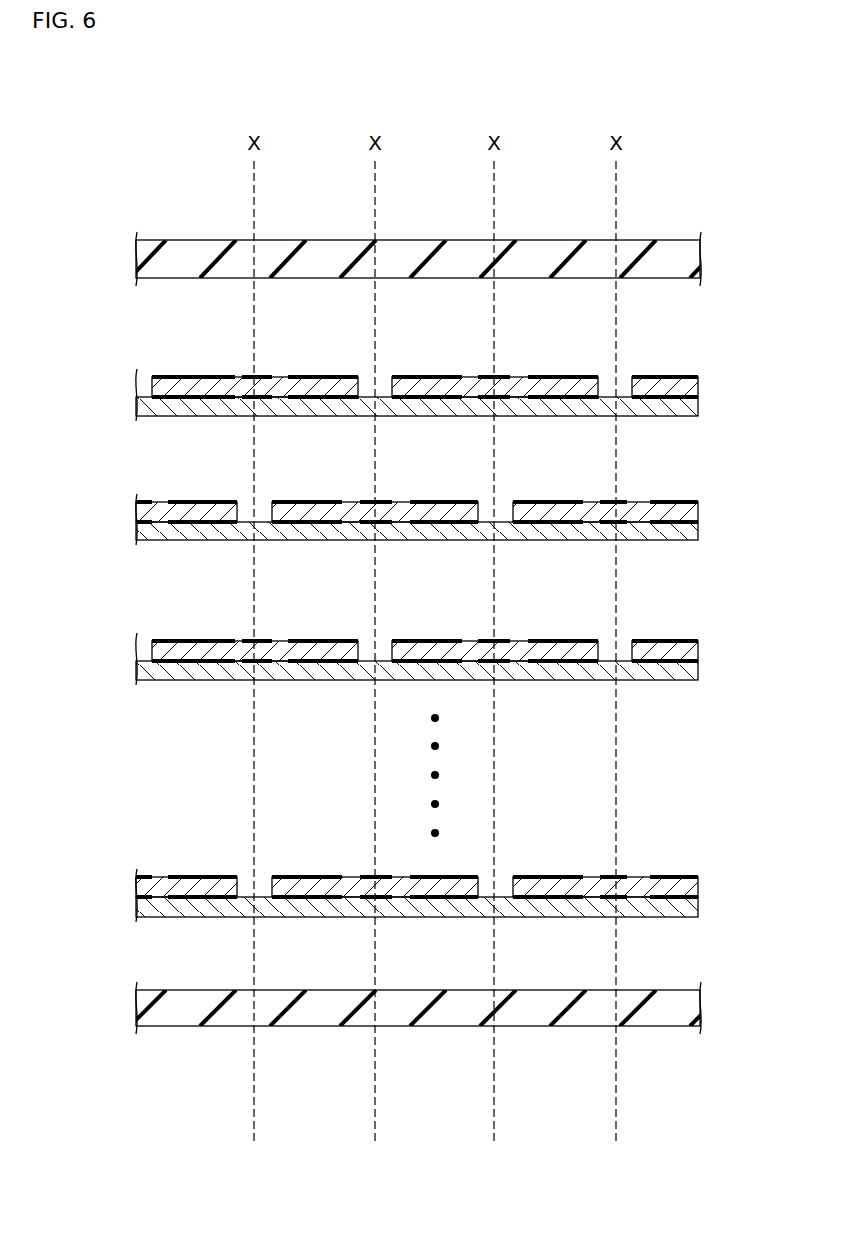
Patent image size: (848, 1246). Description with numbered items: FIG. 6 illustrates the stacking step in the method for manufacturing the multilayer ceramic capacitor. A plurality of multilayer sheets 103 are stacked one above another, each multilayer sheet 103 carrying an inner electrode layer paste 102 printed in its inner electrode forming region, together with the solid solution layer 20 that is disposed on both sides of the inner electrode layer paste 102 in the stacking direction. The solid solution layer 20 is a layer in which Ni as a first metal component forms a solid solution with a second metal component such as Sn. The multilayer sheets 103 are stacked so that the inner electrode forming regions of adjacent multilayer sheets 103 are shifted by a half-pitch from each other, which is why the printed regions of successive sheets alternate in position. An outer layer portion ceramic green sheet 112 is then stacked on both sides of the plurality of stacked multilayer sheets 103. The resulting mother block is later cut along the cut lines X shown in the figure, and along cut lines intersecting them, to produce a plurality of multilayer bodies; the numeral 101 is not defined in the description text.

The outer layer portion ceramic green sheet 112 is at (468, 252).
The multilayer sheet 103 is at (443, 615).
The inner electrode layer paste 102 is at (153, 385).
The solid solution layer 20 is at (198, 377).
The substrate 101 is at (673, 407).